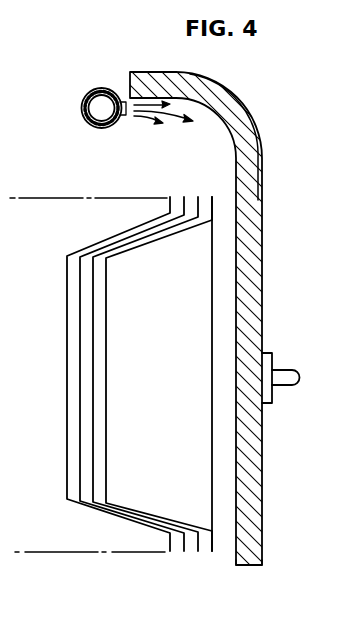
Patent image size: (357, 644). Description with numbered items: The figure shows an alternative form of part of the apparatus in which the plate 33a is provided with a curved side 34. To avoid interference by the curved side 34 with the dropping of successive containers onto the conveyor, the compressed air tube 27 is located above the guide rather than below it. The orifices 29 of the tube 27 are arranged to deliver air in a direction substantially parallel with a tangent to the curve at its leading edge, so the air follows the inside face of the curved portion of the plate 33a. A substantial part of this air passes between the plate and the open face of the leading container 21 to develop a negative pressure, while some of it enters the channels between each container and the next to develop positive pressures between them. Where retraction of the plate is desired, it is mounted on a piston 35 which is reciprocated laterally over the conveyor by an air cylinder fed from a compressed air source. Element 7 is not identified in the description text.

The curved side 34 is at (158, 78).
The compressed air tube 27 is at (81, 112).
The orifices 29 is at (133, 113).
The leading container 21 is at (107, 290).
The plates / fins 7 is at (106, 362).
The piston 35 is at (290, 372).
The plate 33a is at (250, 566).